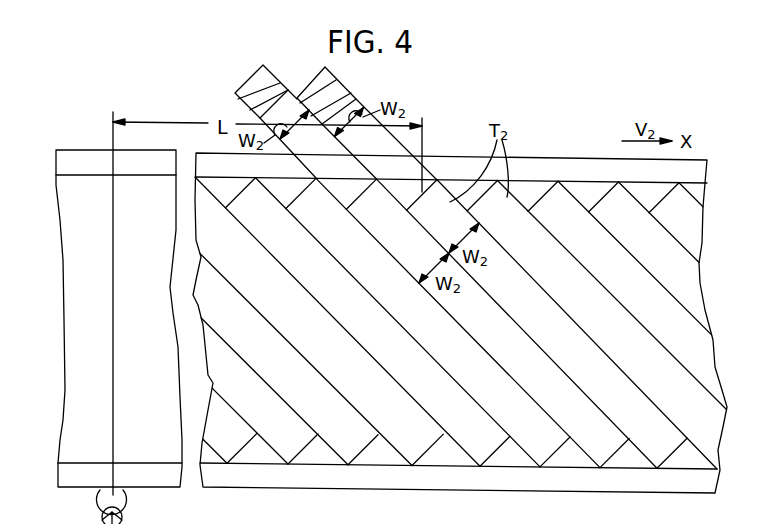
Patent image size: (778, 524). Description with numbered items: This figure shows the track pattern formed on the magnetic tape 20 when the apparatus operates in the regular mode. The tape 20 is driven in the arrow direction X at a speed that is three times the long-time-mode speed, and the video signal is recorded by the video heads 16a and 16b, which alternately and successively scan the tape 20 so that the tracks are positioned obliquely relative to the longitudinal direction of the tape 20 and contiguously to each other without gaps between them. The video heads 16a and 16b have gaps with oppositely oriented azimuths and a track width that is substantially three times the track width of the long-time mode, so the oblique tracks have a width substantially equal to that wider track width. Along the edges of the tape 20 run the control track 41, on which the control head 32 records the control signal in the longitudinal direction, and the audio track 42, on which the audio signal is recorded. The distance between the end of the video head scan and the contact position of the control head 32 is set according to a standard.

The magnetic tape 20 is at (460, 318).
The audio track 42 is at (549, 160).
The control track 41 is at (511, 481).
The video head 16a is at (341, 84).
The video head 16b is at (243, 84).
The control head 32 is at (127, 508).